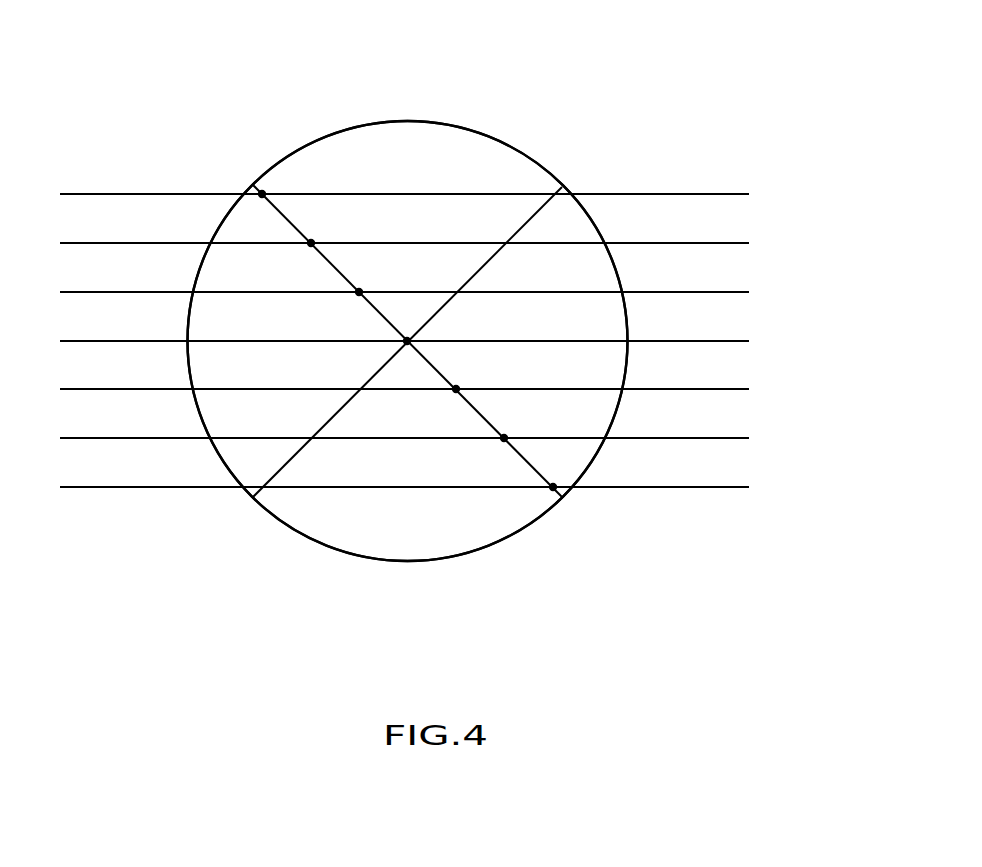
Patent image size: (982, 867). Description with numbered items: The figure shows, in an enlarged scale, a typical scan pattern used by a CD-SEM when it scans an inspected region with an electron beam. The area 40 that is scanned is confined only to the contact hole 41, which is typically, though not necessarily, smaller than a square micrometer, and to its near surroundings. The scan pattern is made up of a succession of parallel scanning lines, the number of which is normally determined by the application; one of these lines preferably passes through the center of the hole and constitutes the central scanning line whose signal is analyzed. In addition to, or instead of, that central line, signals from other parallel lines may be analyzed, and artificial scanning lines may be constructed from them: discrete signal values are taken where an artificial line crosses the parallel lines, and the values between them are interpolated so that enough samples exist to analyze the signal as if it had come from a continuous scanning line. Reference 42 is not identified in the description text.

The area 40 is at (185, 74).
The contact hole (CH) 41 is at (278, 523).
The scan line 42 is at (147, 488).